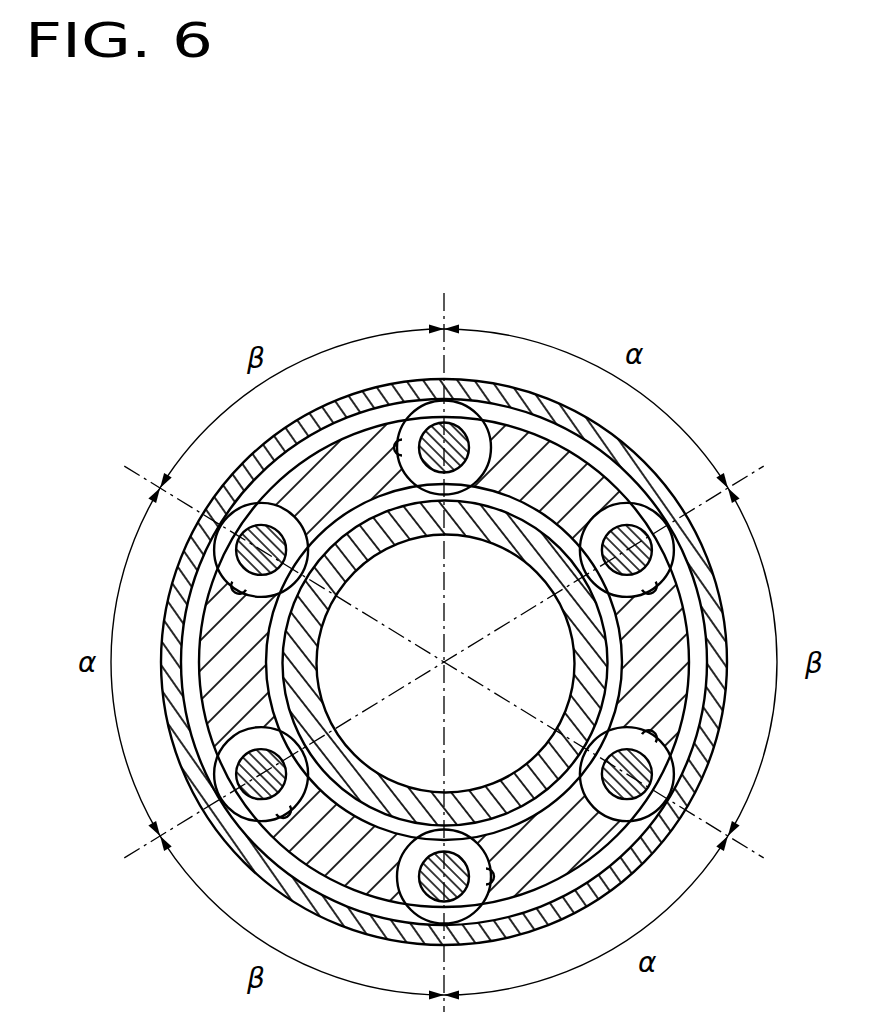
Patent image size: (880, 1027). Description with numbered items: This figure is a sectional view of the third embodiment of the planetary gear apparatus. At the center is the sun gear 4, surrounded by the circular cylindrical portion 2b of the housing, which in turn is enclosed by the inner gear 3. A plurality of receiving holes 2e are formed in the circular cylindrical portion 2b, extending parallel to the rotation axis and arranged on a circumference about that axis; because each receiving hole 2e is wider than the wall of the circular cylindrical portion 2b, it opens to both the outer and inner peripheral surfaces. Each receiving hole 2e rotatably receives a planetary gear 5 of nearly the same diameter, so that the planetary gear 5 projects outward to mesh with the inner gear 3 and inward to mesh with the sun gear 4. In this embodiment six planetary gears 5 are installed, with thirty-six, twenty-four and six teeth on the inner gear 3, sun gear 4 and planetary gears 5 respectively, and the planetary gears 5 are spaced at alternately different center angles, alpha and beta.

The circular cylindrical portion 2b is at (673, 700).
The receiving hole 2e is at (400, 425).
The inner gear 3 is at (660, 500).
The sun gear 4 is at (300, 683).
The planetary gear 5 is at (466, 430).